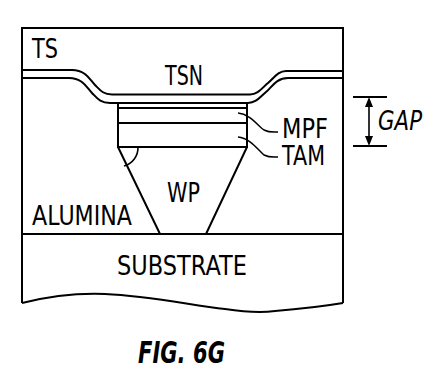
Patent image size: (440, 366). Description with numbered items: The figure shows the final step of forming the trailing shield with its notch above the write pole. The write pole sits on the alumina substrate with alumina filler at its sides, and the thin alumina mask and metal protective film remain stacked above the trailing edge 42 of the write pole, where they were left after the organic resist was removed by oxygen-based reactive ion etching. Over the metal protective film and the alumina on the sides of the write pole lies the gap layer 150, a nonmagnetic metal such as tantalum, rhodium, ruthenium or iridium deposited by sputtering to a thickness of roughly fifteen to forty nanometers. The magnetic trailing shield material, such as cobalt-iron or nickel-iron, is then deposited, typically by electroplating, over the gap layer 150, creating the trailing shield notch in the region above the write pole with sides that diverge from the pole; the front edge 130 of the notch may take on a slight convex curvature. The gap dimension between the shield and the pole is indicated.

The front edge of the TSN 130 is at (125, 94).
The gap layer 150 is at (281, 71).
The trailing edge of the WP 42 is at (129, 164).